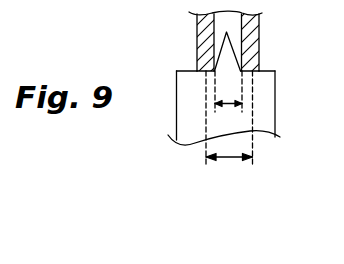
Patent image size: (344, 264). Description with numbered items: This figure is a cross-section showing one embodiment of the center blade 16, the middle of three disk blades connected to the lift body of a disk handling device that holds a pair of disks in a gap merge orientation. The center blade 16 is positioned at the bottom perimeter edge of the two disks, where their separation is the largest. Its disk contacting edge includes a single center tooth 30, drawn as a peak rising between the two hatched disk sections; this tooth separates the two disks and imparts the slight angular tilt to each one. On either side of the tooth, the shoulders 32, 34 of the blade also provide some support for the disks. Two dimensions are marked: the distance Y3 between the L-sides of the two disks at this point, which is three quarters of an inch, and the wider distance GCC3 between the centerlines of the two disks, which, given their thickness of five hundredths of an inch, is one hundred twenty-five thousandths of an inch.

The center blade 16 is at (267, 122).
The center tooth 30 is at (231, 53).
The shoulder 32 is at (190, 73).
The shoulder 34 is at (261, 74).
The distance between the L-sides of the two disks Y3 is at (227, 108).
The distance between centerlines of the two disks GCC3 is at (230, 158).